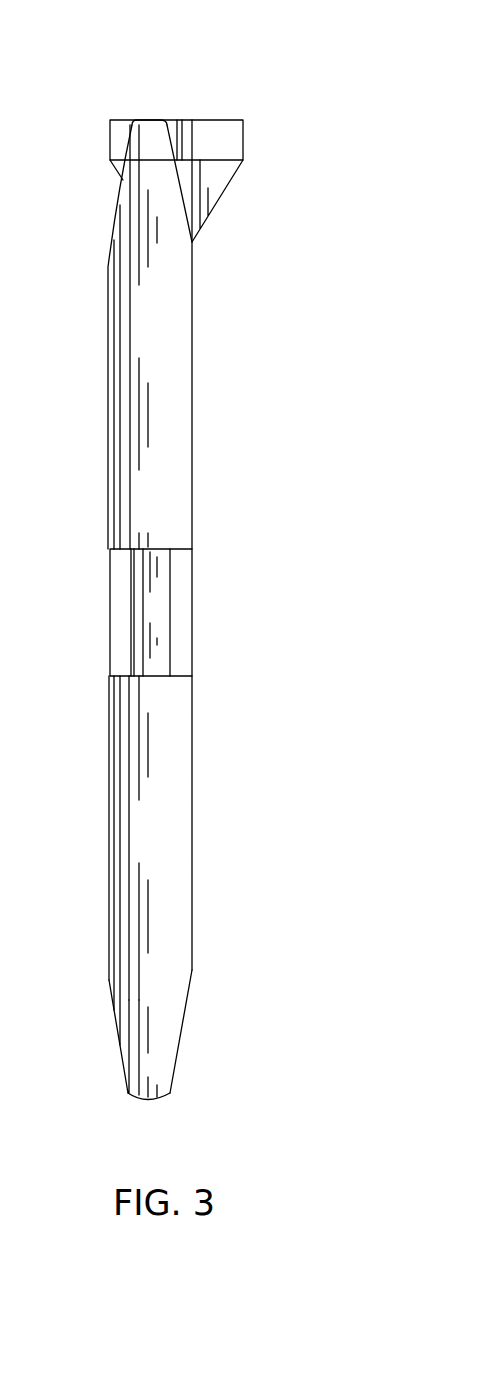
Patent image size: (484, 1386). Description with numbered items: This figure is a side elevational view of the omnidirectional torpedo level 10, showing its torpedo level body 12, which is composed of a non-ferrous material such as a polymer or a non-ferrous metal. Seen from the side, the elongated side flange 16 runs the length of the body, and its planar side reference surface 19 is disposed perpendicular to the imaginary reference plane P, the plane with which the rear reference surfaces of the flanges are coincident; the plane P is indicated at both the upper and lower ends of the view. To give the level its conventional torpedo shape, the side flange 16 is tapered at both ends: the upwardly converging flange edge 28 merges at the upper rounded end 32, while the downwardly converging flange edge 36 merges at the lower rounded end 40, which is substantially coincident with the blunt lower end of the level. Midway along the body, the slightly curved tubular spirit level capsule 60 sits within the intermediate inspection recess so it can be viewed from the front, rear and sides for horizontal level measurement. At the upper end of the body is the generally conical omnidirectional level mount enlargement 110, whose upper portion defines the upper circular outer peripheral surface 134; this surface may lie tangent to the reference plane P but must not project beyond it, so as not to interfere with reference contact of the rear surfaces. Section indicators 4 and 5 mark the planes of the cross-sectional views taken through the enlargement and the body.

The omnidirectional torpedo level 10 is at (224, 290).
The torpedo level body 12 is at (208, 468).
The side flange 16 is at (108, 423).
The planar side reference surface 19 is at (172, 816).
The upwardly converging flange edge 28 is at (145, 203).
The upper rounded end 32 is at (150, 120).
The downwardly converging flange edge 36 is at (168, 1027).
The lower rounded end 40 is at (152, 1098).
The spirit level capsule 60 is at (162, 607).
The omnidirectional level mount enlargement 110 is at (234, 199).
The upper circular outer peripheral surface 134 is at (228, 138).
The section line 4- 4 is at (293, 120).
The section line 5- 5 is at (183, 107).
The imaginary reference plane P is at (110, 35).